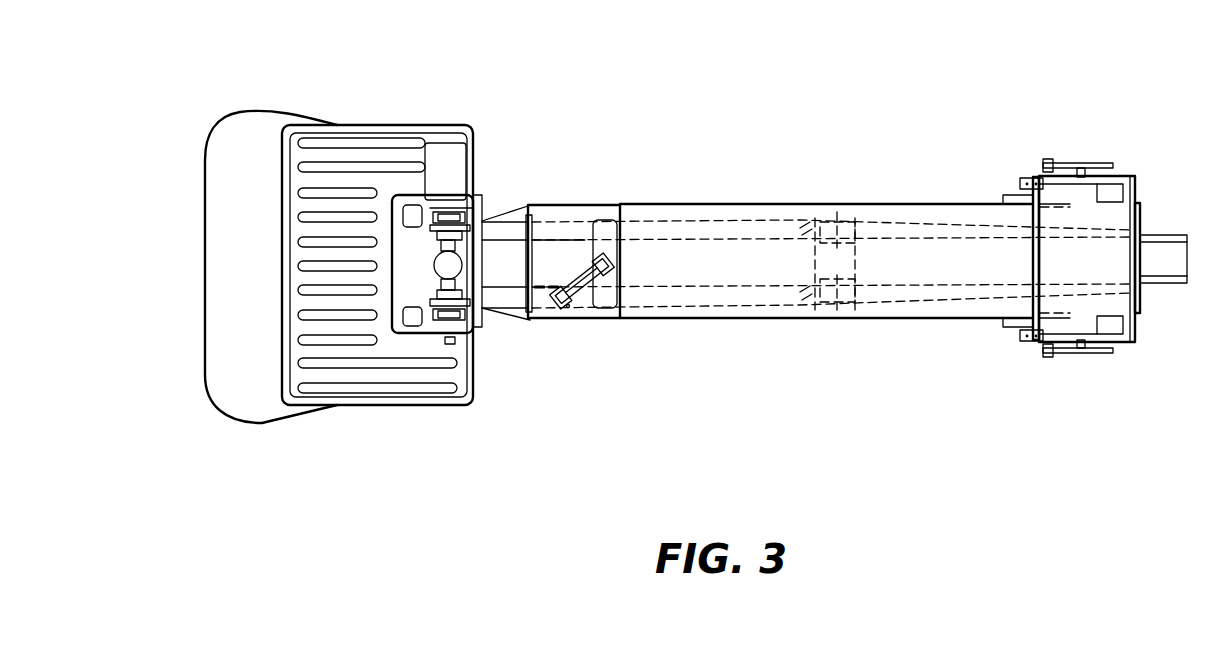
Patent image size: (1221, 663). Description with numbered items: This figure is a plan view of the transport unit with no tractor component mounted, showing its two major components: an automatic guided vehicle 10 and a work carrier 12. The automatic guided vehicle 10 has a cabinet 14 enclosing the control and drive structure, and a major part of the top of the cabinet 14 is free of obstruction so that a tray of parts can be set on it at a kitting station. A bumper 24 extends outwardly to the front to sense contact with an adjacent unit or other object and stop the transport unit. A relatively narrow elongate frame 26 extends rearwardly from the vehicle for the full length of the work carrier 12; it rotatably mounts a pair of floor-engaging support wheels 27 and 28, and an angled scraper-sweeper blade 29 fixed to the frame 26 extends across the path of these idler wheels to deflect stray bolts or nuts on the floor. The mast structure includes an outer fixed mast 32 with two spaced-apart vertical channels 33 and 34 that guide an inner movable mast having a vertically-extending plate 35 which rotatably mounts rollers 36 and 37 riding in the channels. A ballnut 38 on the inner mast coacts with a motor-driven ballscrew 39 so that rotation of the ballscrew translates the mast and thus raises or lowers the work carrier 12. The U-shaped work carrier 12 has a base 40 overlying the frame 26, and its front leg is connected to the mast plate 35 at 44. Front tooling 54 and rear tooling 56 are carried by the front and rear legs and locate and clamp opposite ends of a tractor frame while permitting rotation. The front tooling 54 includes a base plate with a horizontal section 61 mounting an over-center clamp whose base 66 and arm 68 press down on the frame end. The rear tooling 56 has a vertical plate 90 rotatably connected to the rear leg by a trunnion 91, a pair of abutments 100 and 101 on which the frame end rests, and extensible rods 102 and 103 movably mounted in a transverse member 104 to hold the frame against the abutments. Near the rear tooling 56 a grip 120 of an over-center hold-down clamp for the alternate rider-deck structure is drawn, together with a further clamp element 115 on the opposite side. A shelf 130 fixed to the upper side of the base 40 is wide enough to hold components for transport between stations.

The automatic guided vehicle 10 is at (417, 413).
The work carrier 12 is at (1022, 142).
The cabinet 14 is at (411, 124).
The bumper 24 is at (227, 410).
The frame 26 is at (765, 297).
The support wheel 27 is at (843, 216).
The support wheel 28 is at (843, 315).
The scraper-sweeper blade 29 is at (806, 237).
The outer fixed mast 32 is at (423, 335).
The channel 33 is at (468, 203).
The channel 34 is at (473, 328).
The plate 35 is at (482, 212).
The roller 36 is at (452, 221).
The roller 37 is at (462, 322).
The ballnut 38 is at (441, 269).
The ballscrew 39 is at (441, 283).
The base 40 is at (717, 250).
The connection 44 is at (477, 284).
The front tooling 54 is at (599, 320).
The rear tooling 56 is at (1055, 376).
The horizontal section 61 is at (586, 225).
The base 66 is at (568, 308).
The arm 68 is at (606, 270).
The vertical plate 90 is at (1139, 191).
The trunnion 91 is at (1160, 285).
The abutment 100 is at (1023, 178).
The abutment 101 is at (1023, 341).
The extensible rod 102 is at (1004, 196).
The extensible rod 103 is at (1004, 327).
The transverse member 104 is at (1040, 263).
The lower bolt 115 is at (1105, 353).
The grip 120 is at (1087, 163).
The shelf 130 is at (722, 316).